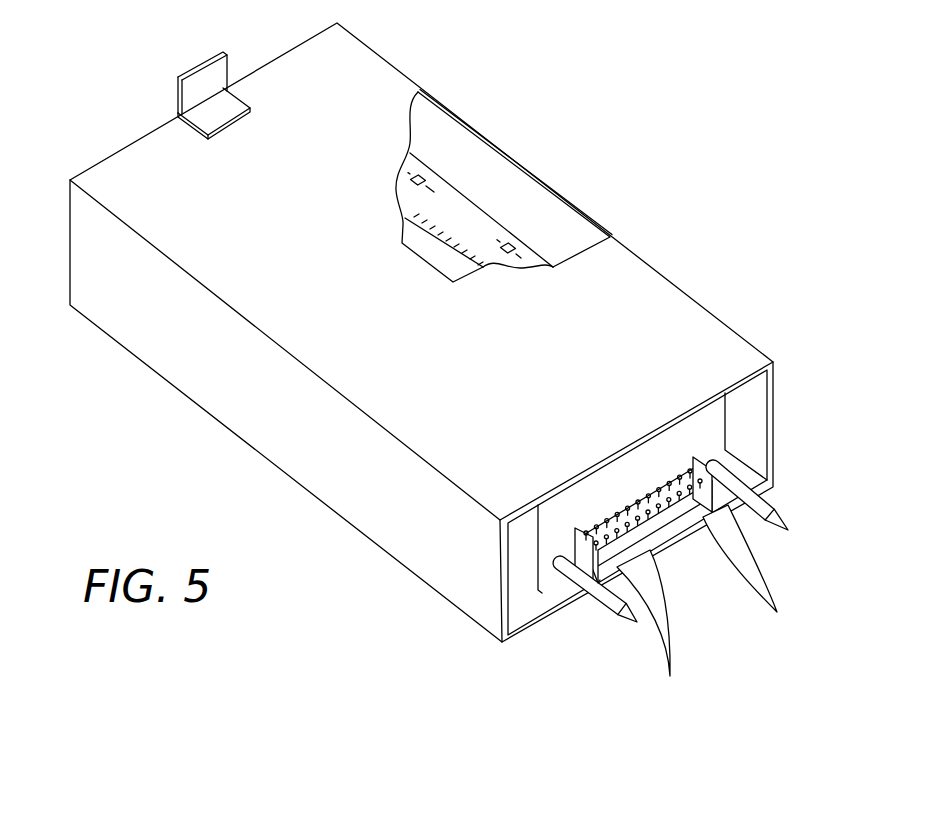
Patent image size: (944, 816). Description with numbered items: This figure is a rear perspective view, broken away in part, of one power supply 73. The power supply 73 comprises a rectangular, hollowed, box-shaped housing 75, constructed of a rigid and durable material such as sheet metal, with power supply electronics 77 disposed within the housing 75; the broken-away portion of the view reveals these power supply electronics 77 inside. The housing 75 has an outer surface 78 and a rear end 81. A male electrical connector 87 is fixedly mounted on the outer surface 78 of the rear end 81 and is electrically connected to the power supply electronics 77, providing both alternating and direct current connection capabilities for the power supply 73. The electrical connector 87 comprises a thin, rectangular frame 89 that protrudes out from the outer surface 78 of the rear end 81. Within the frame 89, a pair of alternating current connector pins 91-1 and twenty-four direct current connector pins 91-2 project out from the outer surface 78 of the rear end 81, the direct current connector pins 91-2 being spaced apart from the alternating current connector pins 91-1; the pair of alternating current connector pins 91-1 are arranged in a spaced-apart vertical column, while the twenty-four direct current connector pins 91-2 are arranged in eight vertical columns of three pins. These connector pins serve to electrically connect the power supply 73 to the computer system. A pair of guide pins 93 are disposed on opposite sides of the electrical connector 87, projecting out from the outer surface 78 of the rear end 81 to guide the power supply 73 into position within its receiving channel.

The power supply 73 is at (168, 422).
The housing 75 is at (165, 340).
The power supply electronics 77 is at (465, 222).
The outer surface 78 is at (363, 77).
The rear end 81 is at (520, 565).
The male electrical connector 87 is at (692, 581).
The frame 89 is at (652, 497).
The alternating current connector pins 91-1 is at (657, 633).
The direct current connector pins 91-2 is at (773, 573).
The guide pins 93 is at (615, 617).